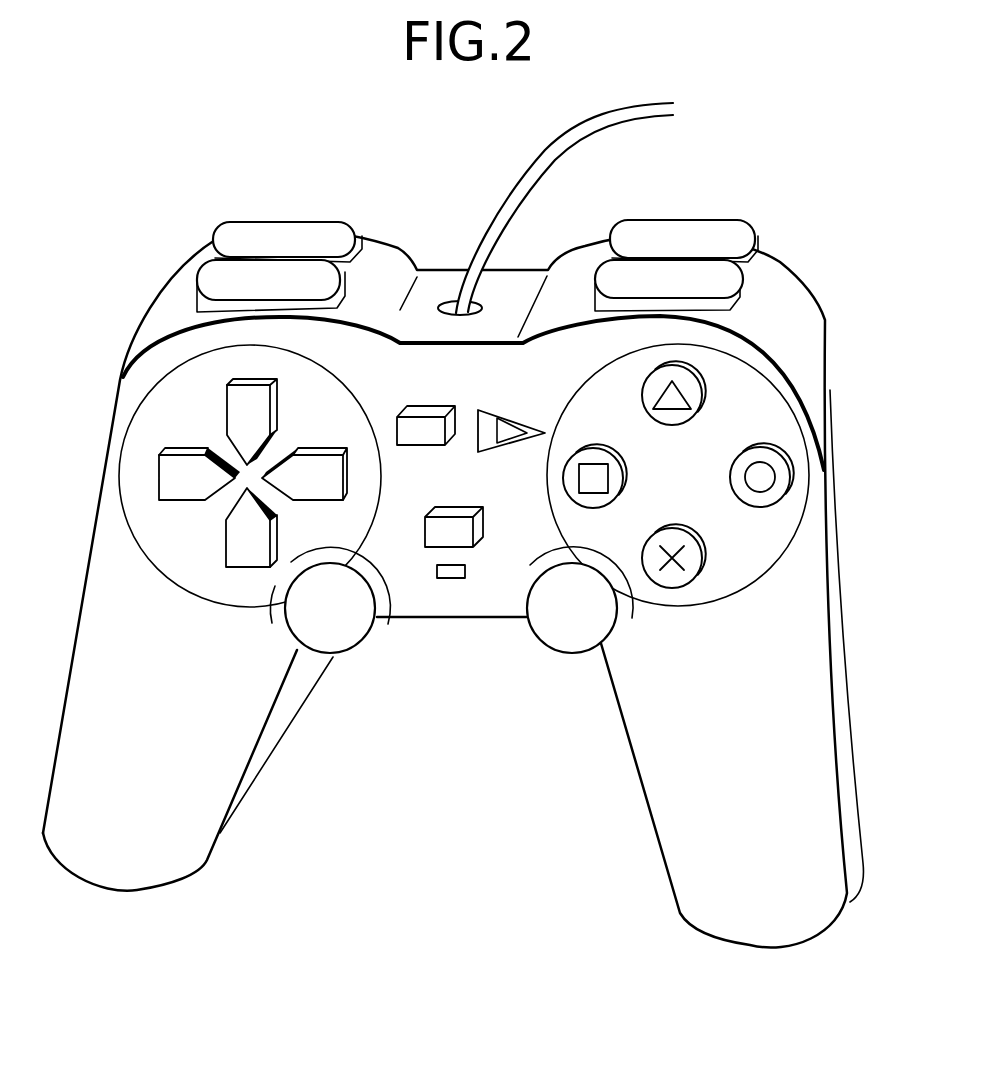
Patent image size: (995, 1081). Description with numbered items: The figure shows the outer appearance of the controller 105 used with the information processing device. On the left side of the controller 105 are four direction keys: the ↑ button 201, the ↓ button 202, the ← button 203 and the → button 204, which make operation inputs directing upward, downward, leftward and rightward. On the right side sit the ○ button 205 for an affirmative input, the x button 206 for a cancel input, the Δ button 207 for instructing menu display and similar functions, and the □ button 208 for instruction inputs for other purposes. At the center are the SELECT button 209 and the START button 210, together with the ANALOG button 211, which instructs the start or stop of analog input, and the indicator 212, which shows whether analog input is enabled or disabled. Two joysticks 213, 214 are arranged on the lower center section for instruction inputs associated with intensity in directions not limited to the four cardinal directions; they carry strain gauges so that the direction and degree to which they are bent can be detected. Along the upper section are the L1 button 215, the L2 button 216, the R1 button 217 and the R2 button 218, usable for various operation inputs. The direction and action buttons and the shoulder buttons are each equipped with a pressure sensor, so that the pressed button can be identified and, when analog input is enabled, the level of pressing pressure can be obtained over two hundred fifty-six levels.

The controller 105 is at (421, 827).
The ↑ button 201 is at (226, 410).
The ↓ button 202 is at (240, 562).
The ← button 203 is at (160, 463).
The → button 204 is at (320, 456).
The ○ button 205 is at (791, 478).
The x button 206 is at (683, 578).
The Δ button 207 is at (702, 388).
The □ button 208 is at (564, 478).
The SELECT button 209 is at (420, 431).
The START button 210 is at (500, 429).
The ANALOG button 211 is at (462, 532).
The indicator 212 is at (442, 579).
The joystick 213 is at (342, 636).
The joystick 214 is at (566, 637).
The L1 button 215 is at (215, 283).
The L2 button 216 is at (240, 237).
The R1 button 217 is at (717, 279).
The R2 button 218 is at (718, 234).